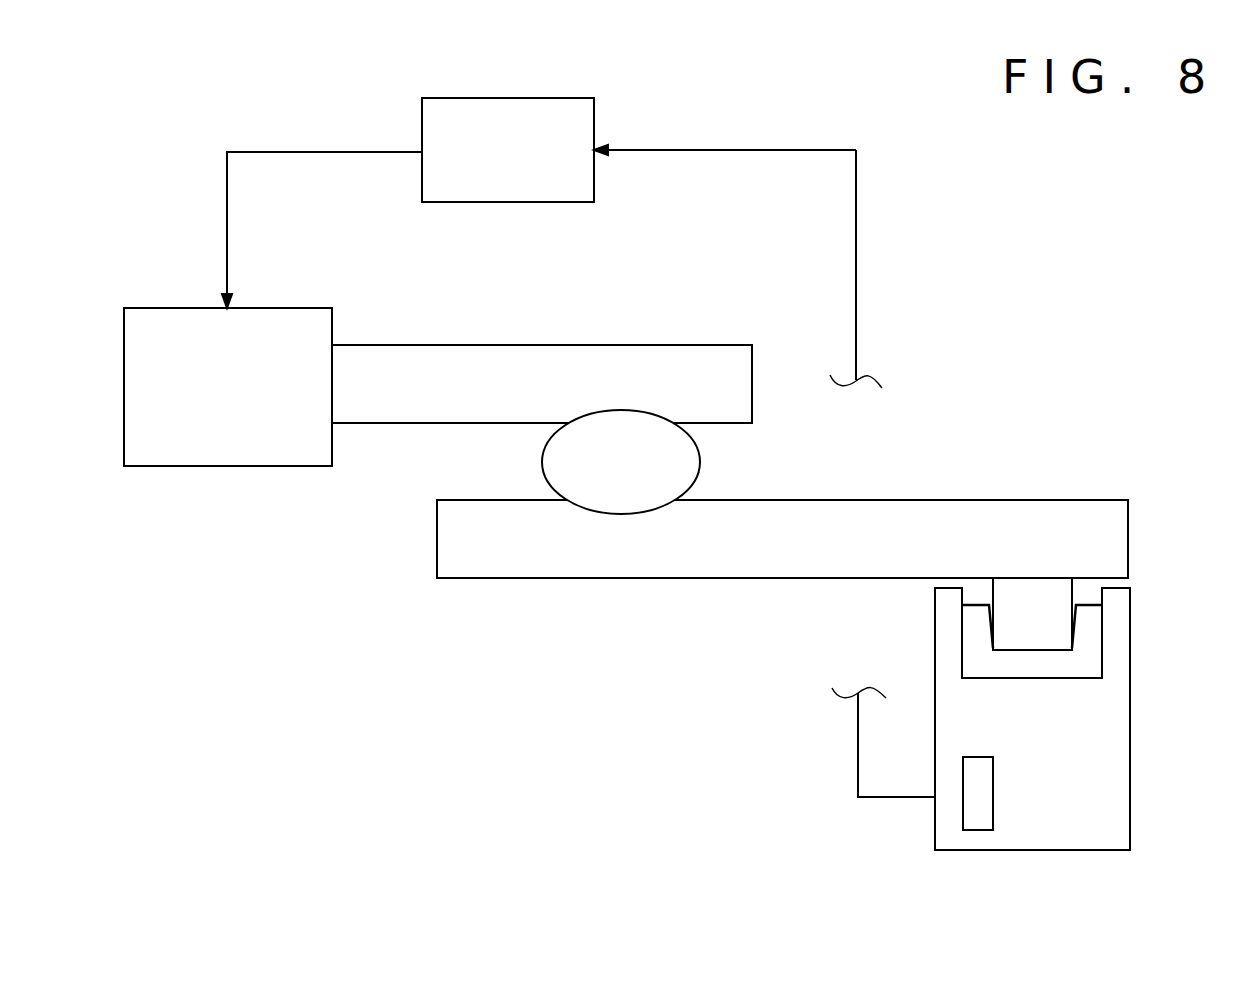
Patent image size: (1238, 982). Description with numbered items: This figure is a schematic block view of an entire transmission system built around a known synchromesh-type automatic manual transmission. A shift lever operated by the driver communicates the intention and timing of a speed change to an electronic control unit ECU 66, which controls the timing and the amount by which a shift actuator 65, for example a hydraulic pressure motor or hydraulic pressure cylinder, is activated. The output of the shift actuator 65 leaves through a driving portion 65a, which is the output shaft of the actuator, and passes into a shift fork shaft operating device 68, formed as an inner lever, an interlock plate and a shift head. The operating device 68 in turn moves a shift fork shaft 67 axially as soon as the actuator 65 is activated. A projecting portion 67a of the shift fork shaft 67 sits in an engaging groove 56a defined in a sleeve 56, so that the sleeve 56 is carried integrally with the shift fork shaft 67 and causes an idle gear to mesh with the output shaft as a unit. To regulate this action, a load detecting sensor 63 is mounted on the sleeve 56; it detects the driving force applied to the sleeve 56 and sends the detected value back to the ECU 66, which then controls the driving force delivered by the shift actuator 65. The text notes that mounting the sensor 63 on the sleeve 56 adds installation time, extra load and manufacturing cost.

The sleeve 56 is at (1092, 797).
The engaging groove 56a is at (1052, 650).
The load detecting sensor 63 is at (973, 814).
The shift actuator 65 is at (209, 403).
The driving portion 65a is at (452, 357).
The electronic control unit (ECU) 66 is at (489, 166).
The shift fork shaft 67 is at (935, 512).
The projecting portion 67a is at (1027, 594).
The shift fork shaft operating device 68 is at (602, 477).